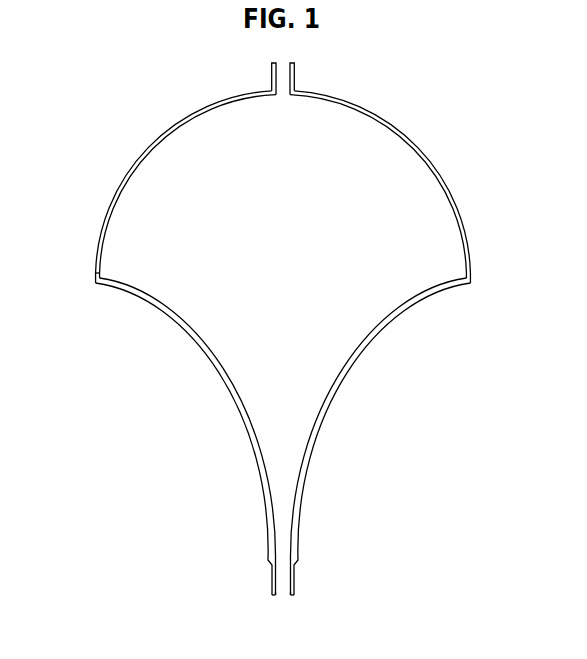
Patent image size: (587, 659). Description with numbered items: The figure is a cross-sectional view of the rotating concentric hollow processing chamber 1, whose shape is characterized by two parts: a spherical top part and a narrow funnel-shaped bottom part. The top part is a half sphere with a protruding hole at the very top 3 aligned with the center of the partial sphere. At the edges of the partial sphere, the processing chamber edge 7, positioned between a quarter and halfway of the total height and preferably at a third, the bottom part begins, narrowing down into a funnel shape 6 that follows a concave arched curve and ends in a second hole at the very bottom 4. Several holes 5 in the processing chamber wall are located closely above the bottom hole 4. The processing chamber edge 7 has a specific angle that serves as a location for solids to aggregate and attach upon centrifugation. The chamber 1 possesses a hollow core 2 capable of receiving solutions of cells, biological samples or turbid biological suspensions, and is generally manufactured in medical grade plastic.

The rotating concentric hollow processing chamber 1 is at (161, 136).
The hollow core 2 is at (400, 172).
The protruding hole at the very top 3 is at (280, 73).
The second hole at the very bottom 4 is at (283, 594).
The holes in the processing chamber wall 5 is at (294, 572).
The funnel shape 6 is at (277, 542).
The processing chamber edge 7 is at (100, 275).